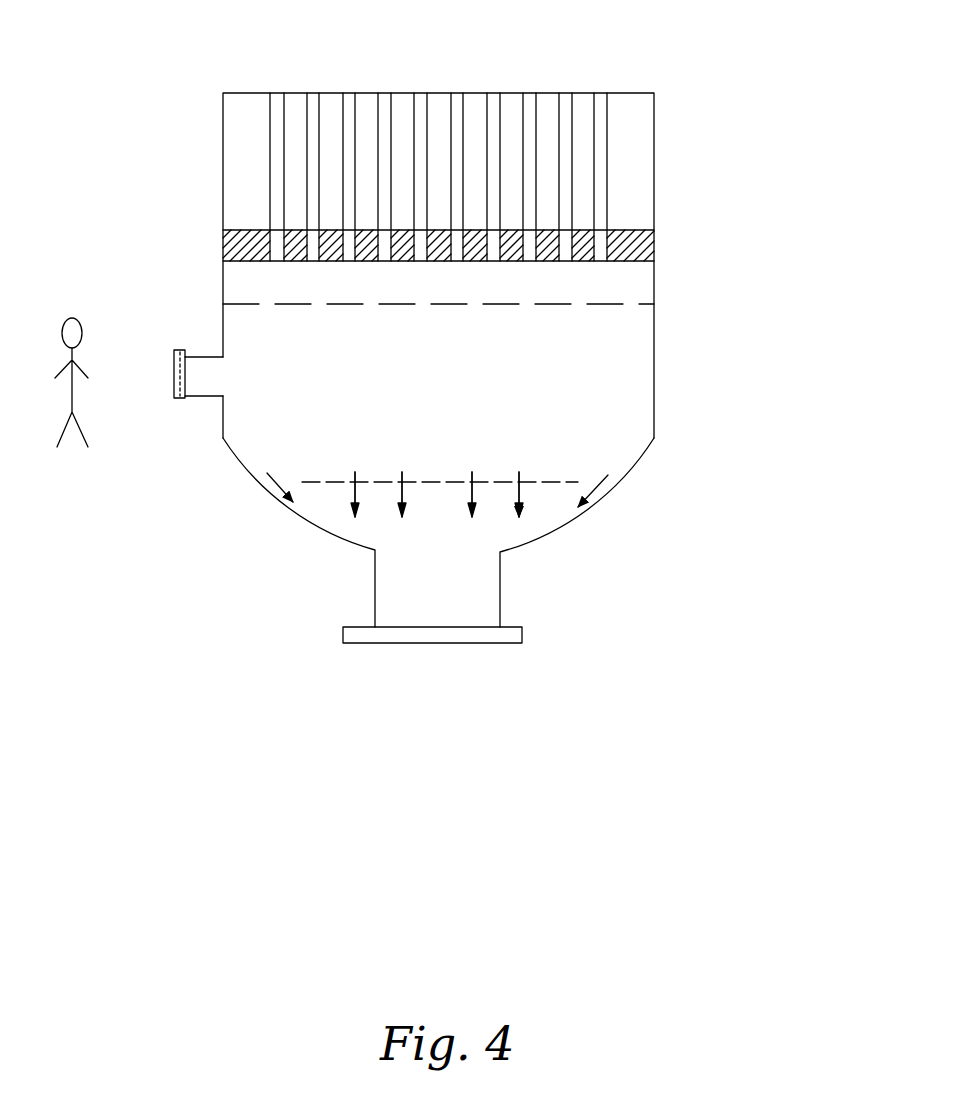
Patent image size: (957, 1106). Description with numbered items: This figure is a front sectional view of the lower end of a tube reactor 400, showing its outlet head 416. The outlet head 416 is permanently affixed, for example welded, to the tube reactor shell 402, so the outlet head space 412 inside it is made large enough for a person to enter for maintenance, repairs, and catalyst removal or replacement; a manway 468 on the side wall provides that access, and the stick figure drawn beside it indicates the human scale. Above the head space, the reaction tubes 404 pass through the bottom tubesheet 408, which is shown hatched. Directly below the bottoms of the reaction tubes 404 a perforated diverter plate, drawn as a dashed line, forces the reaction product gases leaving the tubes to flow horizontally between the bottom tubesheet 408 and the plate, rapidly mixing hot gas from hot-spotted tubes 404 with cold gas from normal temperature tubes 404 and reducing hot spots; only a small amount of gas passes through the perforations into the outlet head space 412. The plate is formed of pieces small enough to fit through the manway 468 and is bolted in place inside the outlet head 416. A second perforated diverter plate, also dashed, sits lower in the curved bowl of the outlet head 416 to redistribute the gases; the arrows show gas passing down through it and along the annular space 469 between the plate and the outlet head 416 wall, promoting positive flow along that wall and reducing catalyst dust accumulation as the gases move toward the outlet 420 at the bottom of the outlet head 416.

The tube reactor 400 is at (747, 78).
The tube reactor shell 402 is at (656, 155).
The reaction tubes 404 is at (578, 92).
The bottom tubesheet 408 is at (628, 230).
The outlet head space 412 is at (470, 388).
The outlet head 416 is at (712, 422).
The outlet 420 is at (432, 616).
The manway 468 is at (200, 398).
The annular space 469 is at (282, 470).